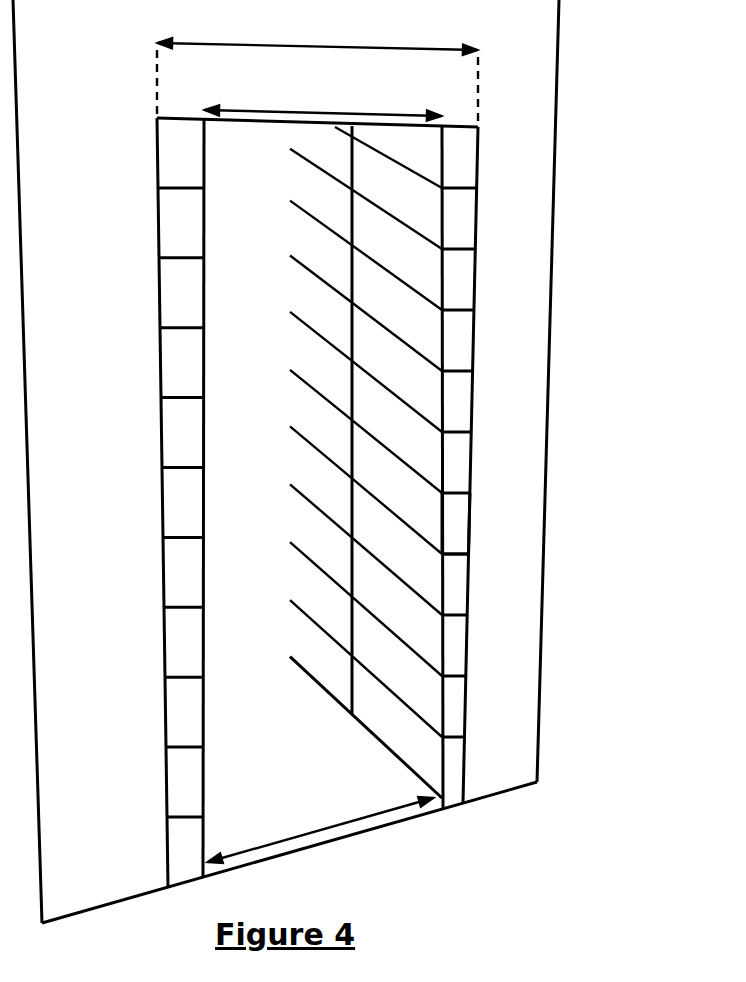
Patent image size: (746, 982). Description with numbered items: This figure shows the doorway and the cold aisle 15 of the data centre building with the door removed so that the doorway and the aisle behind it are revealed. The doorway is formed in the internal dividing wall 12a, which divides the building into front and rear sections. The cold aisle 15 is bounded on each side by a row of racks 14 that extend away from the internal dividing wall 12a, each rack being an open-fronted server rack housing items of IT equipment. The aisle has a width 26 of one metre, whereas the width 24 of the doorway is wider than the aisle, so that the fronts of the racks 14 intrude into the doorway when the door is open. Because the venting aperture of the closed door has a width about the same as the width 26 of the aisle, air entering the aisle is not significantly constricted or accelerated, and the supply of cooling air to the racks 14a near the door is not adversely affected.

The internal dividing wall 12a is at (122, 410).
The racks 14 is at (432, 330).
The racks 14a is at (453, 516).
The cold aisle 15 is at (273, 433).
The width of the doorway 24 is at (320, 46).
The width of the aisle 26 is at (318, 112).